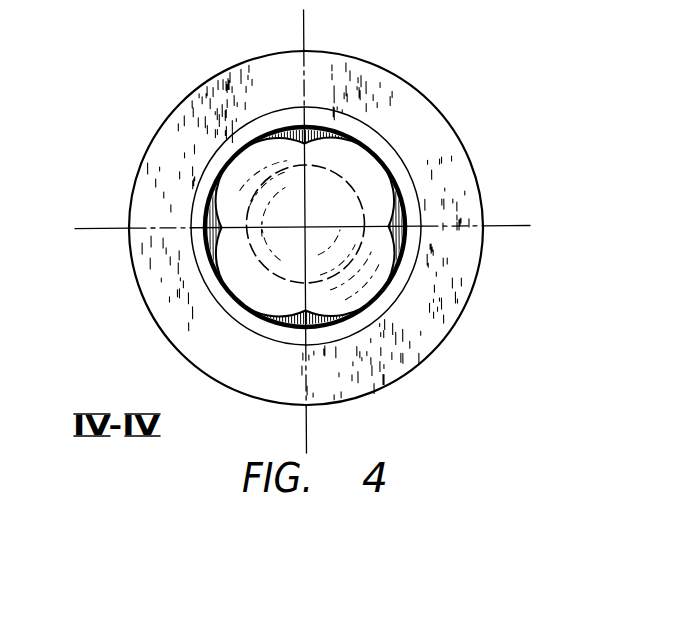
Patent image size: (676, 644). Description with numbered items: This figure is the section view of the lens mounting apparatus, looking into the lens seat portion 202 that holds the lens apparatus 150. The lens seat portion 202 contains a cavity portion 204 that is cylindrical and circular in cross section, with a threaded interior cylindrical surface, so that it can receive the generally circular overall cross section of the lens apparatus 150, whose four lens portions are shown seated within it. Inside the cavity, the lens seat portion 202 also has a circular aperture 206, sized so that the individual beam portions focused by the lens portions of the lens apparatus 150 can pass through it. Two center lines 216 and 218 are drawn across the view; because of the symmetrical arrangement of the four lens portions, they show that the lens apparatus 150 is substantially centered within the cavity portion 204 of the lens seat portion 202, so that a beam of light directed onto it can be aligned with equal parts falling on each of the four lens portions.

The lens seat portion 202 is at (445, 112).
The cavity portion 204 is at (398, 214).
The circular aperture 206 is at (341, 271).
The lens apparatus 150 is at (330, 320).
The center line 216 is at (304, 20).
The center line 218 is at (76, 227).